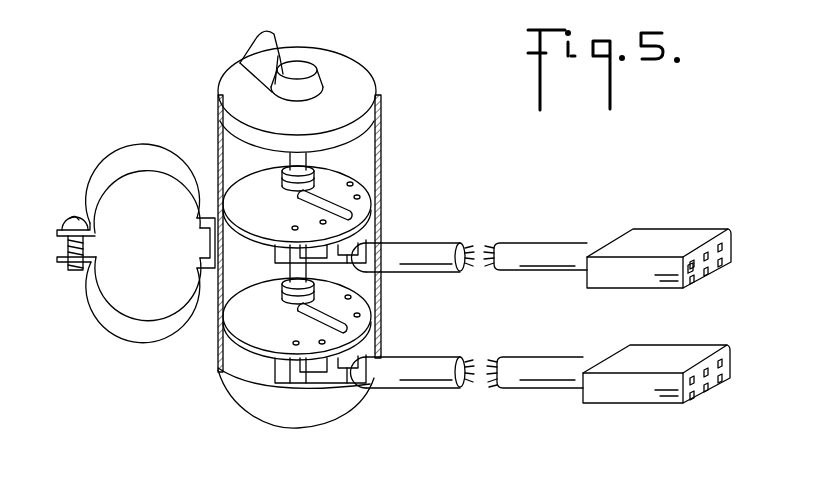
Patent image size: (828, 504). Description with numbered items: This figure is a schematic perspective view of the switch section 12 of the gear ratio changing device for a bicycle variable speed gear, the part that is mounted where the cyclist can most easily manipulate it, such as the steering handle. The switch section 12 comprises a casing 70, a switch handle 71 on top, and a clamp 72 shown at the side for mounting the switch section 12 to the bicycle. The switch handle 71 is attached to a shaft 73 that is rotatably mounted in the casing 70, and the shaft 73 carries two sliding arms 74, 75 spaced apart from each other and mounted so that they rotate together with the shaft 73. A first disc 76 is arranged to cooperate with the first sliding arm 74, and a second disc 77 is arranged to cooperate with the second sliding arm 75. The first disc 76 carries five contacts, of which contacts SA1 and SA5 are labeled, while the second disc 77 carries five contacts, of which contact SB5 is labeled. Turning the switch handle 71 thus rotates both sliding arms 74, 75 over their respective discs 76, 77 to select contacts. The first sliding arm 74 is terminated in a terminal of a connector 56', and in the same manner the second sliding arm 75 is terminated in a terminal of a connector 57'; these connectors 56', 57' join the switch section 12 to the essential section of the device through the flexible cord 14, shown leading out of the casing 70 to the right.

The switch section 12 is at (386, 128).
The flexible cord 14 is at (522, 364).
The connector 56' is at (659, 238).
The connector 57' is at (656, 356).
The casing 70 is at (248, 404).
The switch handle 71 is at (255, 52).
The clamp 72 is at (136, 192).
The shaft 73 is at (303, 160).
The first sliding arm 74 is at (324, 198).
The second sliding arm 75 is at (336, 324).
The first disc 76 is at (251, 217).
The second disc 77 is at (238, 331).
The contact SA1 is at (354, 184).
The contact SA5 is at (292, 227).
The contact SB5 is at (293, 341).